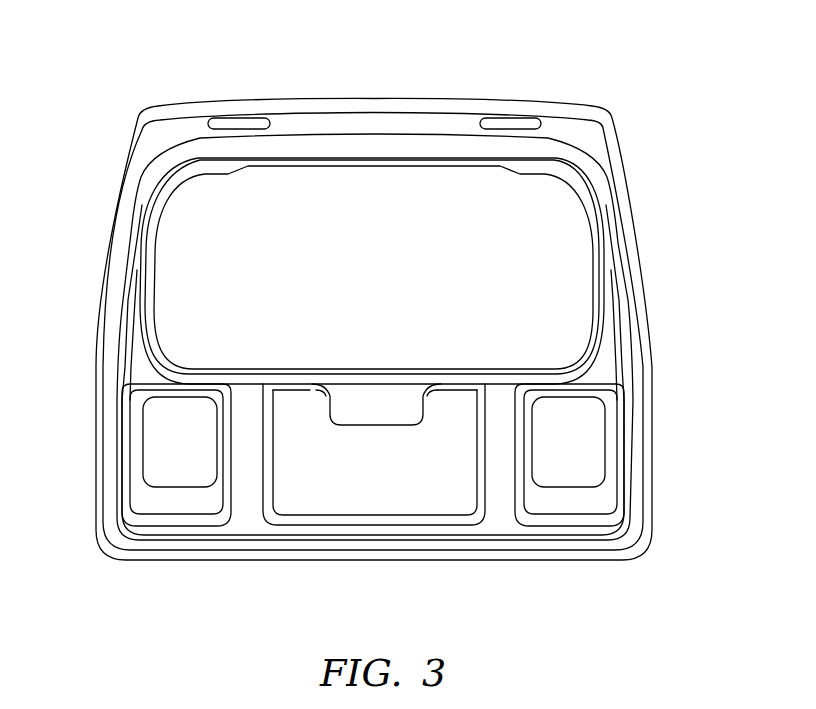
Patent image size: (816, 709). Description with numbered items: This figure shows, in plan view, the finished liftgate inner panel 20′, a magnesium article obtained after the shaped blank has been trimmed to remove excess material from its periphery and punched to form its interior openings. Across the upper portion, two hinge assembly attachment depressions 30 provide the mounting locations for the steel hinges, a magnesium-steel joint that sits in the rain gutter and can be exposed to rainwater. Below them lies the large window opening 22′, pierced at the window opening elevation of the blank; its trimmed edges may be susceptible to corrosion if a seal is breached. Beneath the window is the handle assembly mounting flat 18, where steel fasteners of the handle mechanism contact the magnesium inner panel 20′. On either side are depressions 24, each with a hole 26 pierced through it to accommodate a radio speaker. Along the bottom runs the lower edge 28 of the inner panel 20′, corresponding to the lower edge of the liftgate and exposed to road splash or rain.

The handle assembly mounting flat 18 is at (372, 403).
The inner panel 20′ is at (611, 237).
The window opening 22′ is at (172, 307).
The depression 24 is at (180, 503).
The hole 26 is at (152, 438).
The lower edge 28 is at (284, 566).
The hinge assembly attachment depression 30 is at (240, 125).